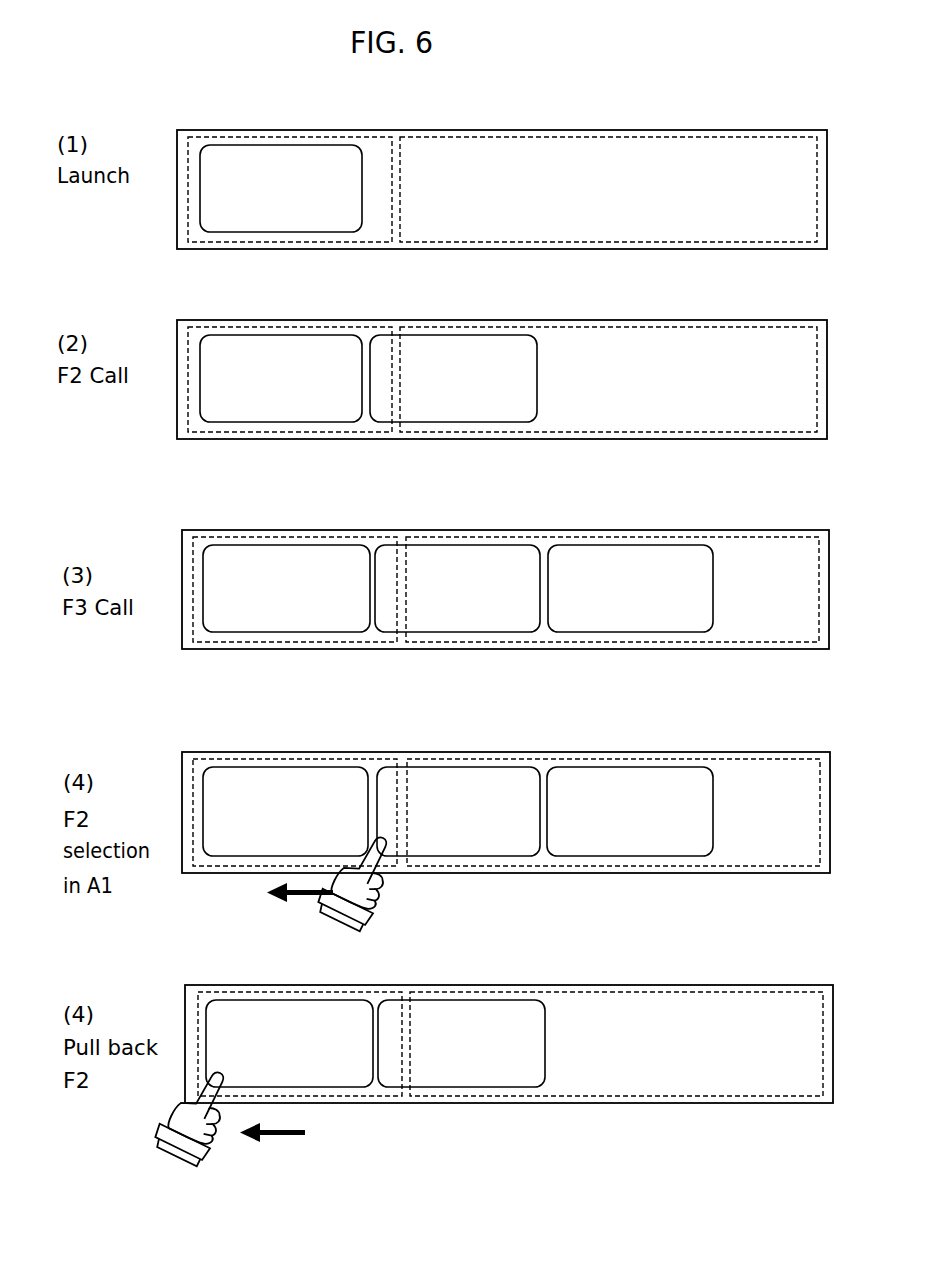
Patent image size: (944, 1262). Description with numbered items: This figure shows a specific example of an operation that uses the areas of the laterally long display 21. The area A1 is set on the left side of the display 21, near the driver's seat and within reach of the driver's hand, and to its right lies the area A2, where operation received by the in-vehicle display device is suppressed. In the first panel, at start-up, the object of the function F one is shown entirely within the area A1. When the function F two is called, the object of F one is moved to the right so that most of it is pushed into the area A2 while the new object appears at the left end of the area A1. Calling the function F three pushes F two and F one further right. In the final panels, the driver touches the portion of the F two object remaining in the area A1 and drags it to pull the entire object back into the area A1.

The display 21 is at (505, 600).
The area A1 is at (295, 596).
The area A2 is at (596, 596).